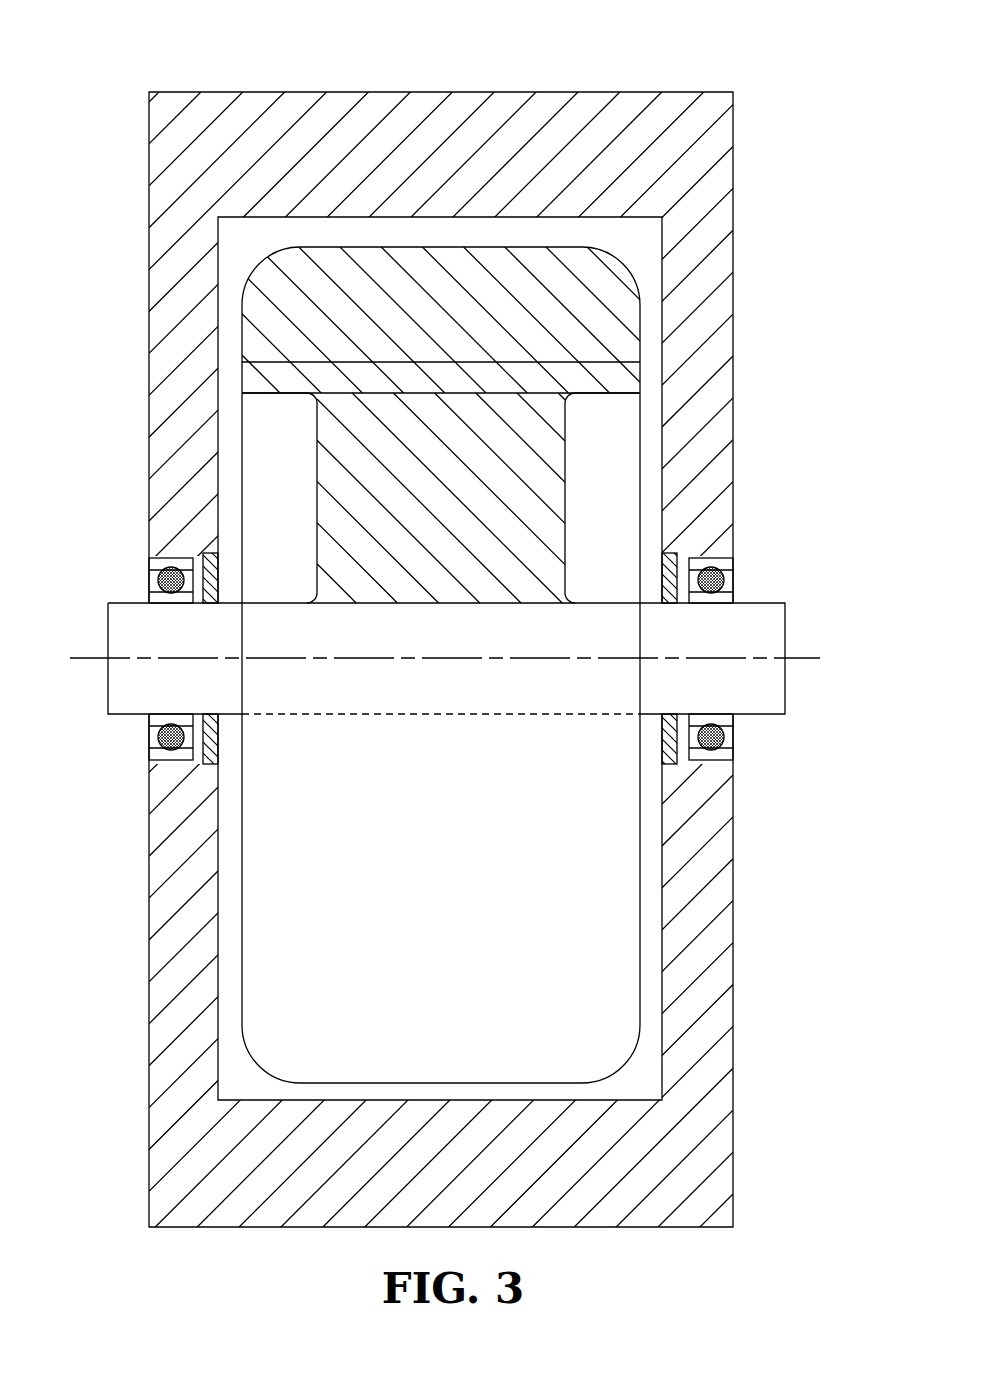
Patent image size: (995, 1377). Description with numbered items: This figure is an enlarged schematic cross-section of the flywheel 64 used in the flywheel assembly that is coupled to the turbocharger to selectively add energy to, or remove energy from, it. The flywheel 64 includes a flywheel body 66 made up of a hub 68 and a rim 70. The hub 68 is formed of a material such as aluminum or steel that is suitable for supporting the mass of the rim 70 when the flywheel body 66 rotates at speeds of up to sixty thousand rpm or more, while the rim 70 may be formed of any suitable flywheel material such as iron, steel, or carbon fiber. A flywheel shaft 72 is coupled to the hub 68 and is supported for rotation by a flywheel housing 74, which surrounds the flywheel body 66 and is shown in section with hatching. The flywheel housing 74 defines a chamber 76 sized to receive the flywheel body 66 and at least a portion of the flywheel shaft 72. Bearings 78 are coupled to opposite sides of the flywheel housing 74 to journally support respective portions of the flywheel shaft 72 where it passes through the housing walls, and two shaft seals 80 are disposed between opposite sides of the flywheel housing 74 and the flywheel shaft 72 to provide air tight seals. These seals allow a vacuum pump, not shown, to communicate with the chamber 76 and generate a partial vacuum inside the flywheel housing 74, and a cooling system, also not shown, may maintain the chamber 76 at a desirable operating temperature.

The flywheel 64 is at (192, 92).
The flywheel body 66 is at (593, 473).
The hub 68 is at (335, 555).
The rim 70 is at (278, 277).
The flywheel shaft 72 is at (750, 640).
The flywheel housing 74 is at (720, 300).
The chamber 76 is at (603, 237).
The bearings 78 is at (168, 755).
The shaft seals 80 is at (678, 553).